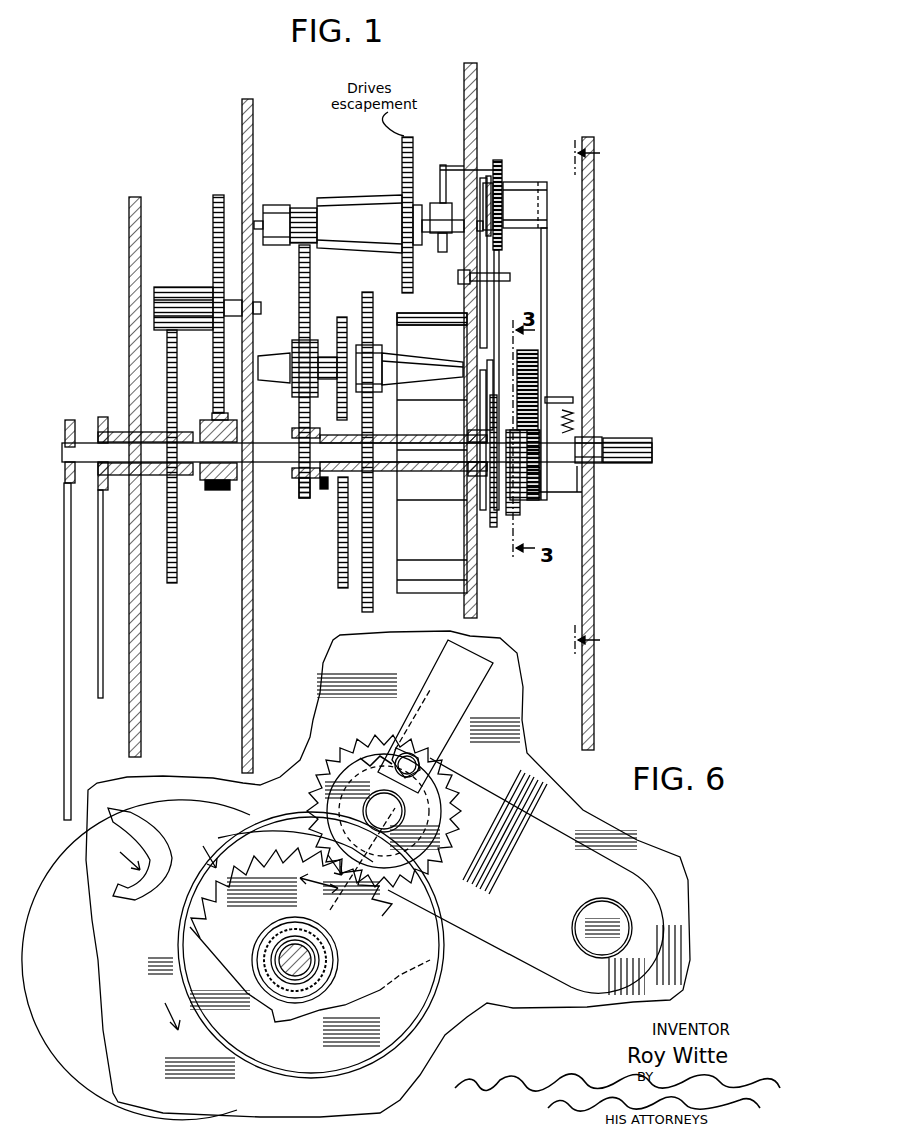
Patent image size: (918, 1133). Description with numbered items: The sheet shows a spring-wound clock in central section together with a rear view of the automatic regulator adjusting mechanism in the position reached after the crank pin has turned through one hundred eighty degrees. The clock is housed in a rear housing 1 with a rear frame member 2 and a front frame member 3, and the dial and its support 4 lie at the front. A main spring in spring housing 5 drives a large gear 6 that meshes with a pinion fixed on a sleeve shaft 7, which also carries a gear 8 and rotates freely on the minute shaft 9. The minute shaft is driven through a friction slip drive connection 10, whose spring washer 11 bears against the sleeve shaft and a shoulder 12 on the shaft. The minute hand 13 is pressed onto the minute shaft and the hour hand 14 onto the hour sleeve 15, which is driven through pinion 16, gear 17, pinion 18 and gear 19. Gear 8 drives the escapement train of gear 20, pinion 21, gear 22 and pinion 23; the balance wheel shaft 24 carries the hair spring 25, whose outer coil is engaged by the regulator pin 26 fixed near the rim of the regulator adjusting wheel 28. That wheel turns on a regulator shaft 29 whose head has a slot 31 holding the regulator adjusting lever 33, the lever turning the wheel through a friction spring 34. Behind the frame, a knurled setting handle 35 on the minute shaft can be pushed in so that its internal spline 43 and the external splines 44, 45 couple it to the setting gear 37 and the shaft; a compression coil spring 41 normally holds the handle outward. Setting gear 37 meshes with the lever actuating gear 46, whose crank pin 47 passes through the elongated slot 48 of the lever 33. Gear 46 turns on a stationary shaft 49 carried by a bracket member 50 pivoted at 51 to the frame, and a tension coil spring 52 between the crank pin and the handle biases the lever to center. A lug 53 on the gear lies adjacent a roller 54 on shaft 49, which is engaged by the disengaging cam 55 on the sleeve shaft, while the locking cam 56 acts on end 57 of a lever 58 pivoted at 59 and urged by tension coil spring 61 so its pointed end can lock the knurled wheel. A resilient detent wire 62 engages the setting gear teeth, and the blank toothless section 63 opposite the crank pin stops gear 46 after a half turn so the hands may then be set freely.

In FIG. 1, the rear housing 1 is at (594, 292).
In FIG. 1, the rear frame member 2 is at (478, 97).
In FIG. 6, the rear frame member 2 is at (688, 881).
In FIG. 1, the front frame member 3 is at (253, 163).
In FIG. 1, the clock dial and its support 4 is at (129, 243).
In FIG. 1, the spring housing 5 is at (428, 585).
In FIG. 1, the large gear 6 is at (362, 604).
In FIG. 1, the sleeve shaft 7 is at (404, 437).
In FIG. 1, the gear 8 is at (338, 552).
In FIG. 1, the minute shaft 9 is at (278, 462).
In FIG. 6, the minute shaft 9 is at (316, 958).
In FIG. 1, the slip drive connection 10 is at (324, 484).
In FIG. 1, the spring washer 11 is at (306, 480).
In FIG. 1, the shoulder 12 is at (306, 434).
In FIG. 1, the minute hand 13 is at (64, 776).
In FIG. 1, the hour hand 14 is at (100, 698).
In FIG. 1, the hour sleeve 15 is at (148, 475).
In FIG. 1, the pinion 16 is at (216, 490).
In FIG. 1, the gear 17 is at (213, 250).
In FIG. 1, the pinion 18 is at (190, 287).
In FIG. 1, the gear 19 is at (177, 542).
In FIG. 1, the gear 20 is at (402, 158).
In FIG. 1, the pinion 21 is at (308, 206).
In FIG. 1, the gear 22 is at (312, 292).
In FIG. 1, the pinion 23 is at (338, 330).
In FIG. 1, the balance wheel shaft 24 is at (433, 212).
In FIG. 1, the hair spring 25 is at (444, 252).
In FIG. 1, the pin 26 is at (455, 157).
In FIG. 1, the regulator adjusting wheel 28 is at (498, 164).
In FIG. 1, the regulator shaft 29 is at (484, 178).
In FIG. 1, the slot 31 is at (545, 182).
In FIG. 1, the regulator adjusting lever 33 is at (548, 326).
In FIG. 6, the regulator adjusting lever 33 is at (432, 682).
In FIG. 1, the friction spring 34 is at (502, 186).
In FIG. 1, the setting handle 35 is at (626, 470).
In FIG. 6, the setting handle 35 is at (273, 1012).
In FIG. 1, the setting gear 37 is at (534, 486).
In FIG. 6, the setting gear 37 is at (190, 930).
In FIG. 6, the compression coil spring 41 is at (266, 938).
In FIG. 6, the internal spline 43 is at (338, 974).
In FIG. 1, the external spline 44 is at (546, 432).
In FIG. 6, the external spline 45 is at (272, 956).
In FIG. 1, the lever actuating gear 46 is at (540, 360).
In FIG. 6, the lever actuating gear 46 is at (362, 750).
In FIG. 1, the crank pin 47 is at (560, 397).
In FIG. 6, the crank pin 47 is at (396, 748).
In FIG. 6, the elongated slot 48 is at (416, 754).
In FIG. 6, the stationary shaft 49 is at (409, 802).
In FIG. 6, the bracket member 50 is at (486, 806).
In FIG. 6, the pivot 51 is at (590, 914).
In FIG. 1, the tension coil spring 52 is at (575, 416).
In FIG. 6, the tension coil spring 52 is at (345, 764).
In FIG. 1, the lug 53 is at (499, 332).
In FIG. 6, the lug 53 is at (340, 884).
In FIG. 1, the roller 54 is at (487, 392).
In FIG. 6, the roller 54 is at (441, 856).
In FIG. 1, the disengaging cam 55 is at (512, 516).
In FIG. 6, the disengaging cam 55 is at (214, 850).
In FIG. 1, the locking cam 56 is at (494, 527).
In FIG. 6, the locking cam 56 is at (150, 1012).
In FIG. 1, the lever end 57 is at (470, 472).
In FIG. 6, the lever end 57 is at (136, 908).
In FIG. 1, the lever 58 is at (480, 412).
In FIG. 1, the pivot 59 is at (462, 362).
In FIG. 1, the tension coil spring 61 is at (504, 276).
In FIG. 1, the resilient detent wire 62 is at (582, 492).
In FIG. 6, the blank section 63 is at (298, 856).